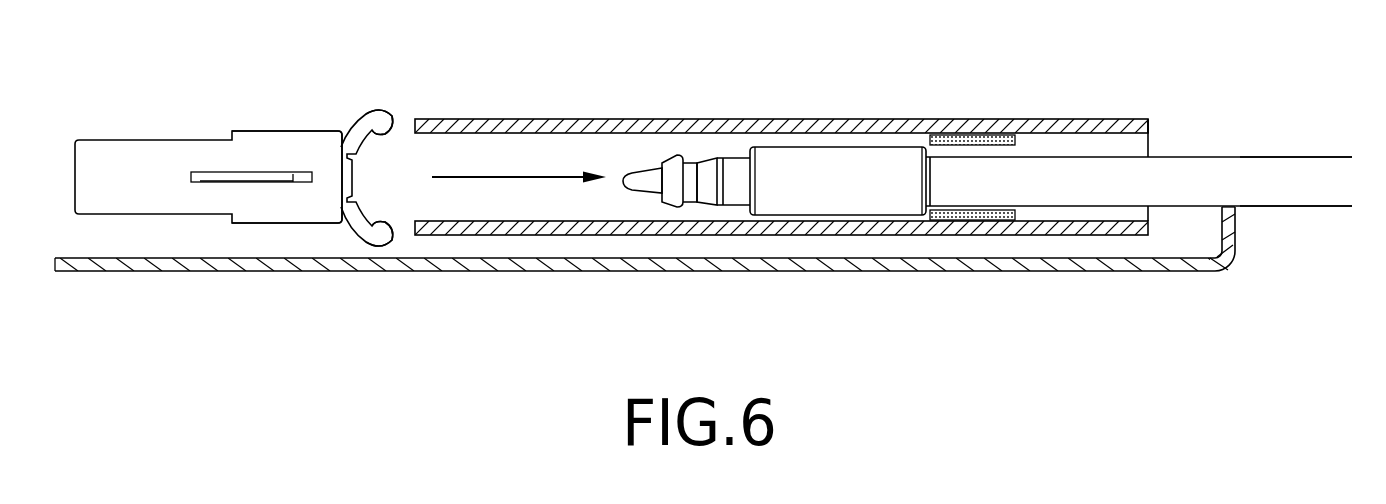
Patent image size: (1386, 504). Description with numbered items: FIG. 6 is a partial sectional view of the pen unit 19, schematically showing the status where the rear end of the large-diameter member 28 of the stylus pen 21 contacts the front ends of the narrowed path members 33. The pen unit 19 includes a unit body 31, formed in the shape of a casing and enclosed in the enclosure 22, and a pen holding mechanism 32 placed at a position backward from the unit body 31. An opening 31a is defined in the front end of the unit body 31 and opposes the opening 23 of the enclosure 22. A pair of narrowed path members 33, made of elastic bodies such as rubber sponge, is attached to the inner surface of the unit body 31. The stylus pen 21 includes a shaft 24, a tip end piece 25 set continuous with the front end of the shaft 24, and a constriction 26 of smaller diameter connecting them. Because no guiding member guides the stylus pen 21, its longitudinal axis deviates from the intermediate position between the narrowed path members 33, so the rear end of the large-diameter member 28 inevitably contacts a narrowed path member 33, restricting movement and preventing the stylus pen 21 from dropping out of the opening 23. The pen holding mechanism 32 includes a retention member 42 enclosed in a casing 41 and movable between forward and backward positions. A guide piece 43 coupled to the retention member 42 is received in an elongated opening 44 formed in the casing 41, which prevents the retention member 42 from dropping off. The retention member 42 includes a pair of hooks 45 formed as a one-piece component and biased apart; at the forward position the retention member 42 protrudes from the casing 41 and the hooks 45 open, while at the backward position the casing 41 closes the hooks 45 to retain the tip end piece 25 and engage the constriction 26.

The pen unit 19 is at (987, 82).
The stylus pen 21 is at (1183, 144).
The enclosure 22 is at (780, 272).
The opening 23 is at (1233, 207).
The shaft 24 is at (1262, 157).
The tip end piece 25 is at (671, 158).
The constriction 26 is at (693, 160).
The large-diameter member 28 is at (773, 147).
The unit body 31 is at (521, 118).
The opening 31a is at (1148, 119).
The pen holding mechanism 32 is at (152, 130).
The narrowed path member 33 is at (928, 136).
The casing 41 is at (285, 130).
The retention member 42 is at (376, 255).
The guide piece 43 is at (295, 176).
The elongated opening 44 is at (194, 176).
The hooks 45 is at (393, 95).